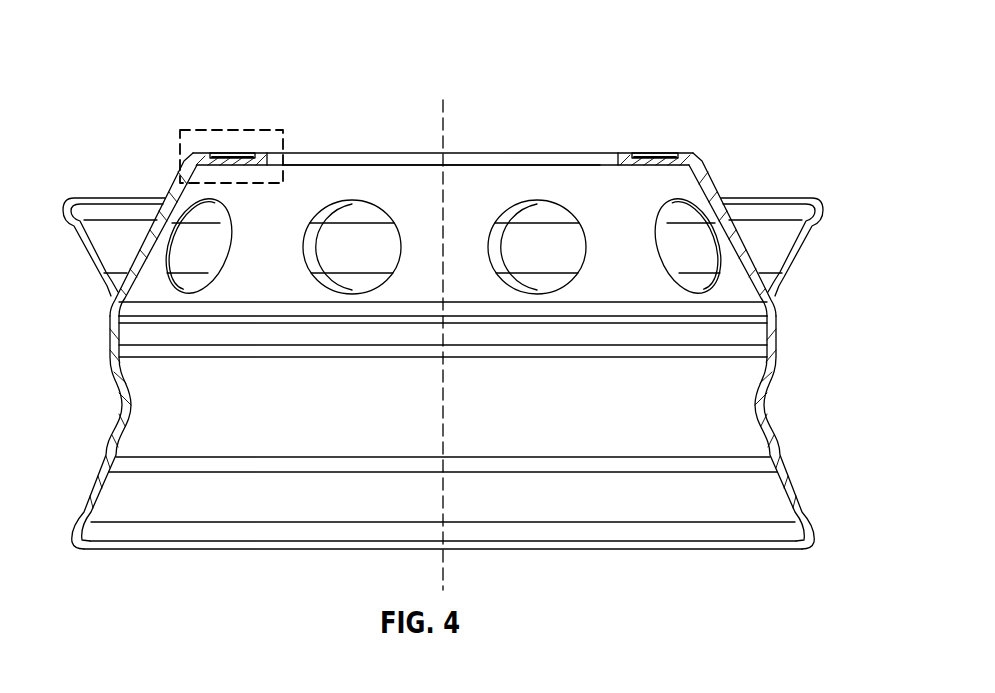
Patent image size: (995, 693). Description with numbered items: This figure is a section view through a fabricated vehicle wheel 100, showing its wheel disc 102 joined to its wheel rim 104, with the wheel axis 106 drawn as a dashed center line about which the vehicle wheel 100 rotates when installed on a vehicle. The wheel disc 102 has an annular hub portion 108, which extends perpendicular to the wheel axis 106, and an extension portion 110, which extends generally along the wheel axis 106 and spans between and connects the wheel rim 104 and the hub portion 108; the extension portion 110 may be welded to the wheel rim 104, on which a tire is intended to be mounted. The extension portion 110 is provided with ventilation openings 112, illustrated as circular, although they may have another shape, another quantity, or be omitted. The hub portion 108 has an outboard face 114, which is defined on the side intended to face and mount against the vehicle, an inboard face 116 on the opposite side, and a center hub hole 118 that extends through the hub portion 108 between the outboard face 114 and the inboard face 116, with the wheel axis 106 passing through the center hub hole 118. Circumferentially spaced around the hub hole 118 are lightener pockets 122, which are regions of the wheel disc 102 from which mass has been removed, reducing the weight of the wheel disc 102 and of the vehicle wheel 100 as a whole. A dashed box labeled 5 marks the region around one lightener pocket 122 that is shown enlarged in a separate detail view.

The fabricated vehicle wheel 100 is at (803, 76).
The wheel disc 102 is at (143, 167).
The wheel rim 104 is at (762, 412).
The wheel axis 106 is at (446, 128).
The hub portion 108 is at (628, 155).
The extension portion 110 is at (718, 177).
The ventilation openings 112 is at (312, 257).
The outboard face 114 is at (683, 155).
The inboard face 116 is at (642, 167).
The center hub hole 118 is at (532, 152).
The lightener pockets 122 is at (233, 153).
The detail view region of FIG. 5 is at (215, 130).